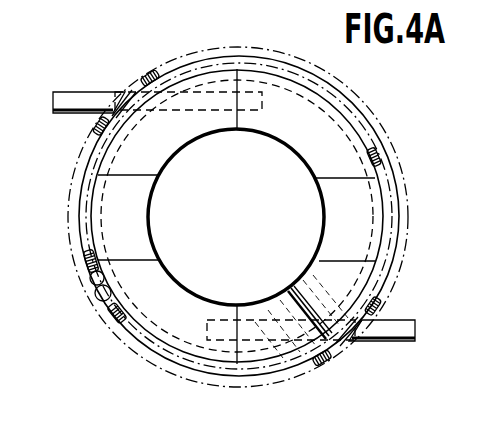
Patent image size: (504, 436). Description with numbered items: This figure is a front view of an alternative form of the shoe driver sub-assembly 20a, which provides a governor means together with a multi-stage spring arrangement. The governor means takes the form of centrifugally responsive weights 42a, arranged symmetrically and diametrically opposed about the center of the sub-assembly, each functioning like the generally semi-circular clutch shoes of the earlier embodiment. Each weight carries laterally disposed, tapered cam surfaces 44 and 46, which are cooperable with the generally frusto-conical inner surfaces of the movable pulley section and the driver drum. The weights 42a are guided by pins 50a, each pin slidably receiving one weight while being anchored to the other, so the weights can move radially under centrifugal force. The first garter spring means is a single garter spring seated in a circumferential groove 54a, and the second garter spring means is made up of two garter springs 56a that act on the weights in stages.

The shoe driver sub-assembly 20a is at (247, 36).
The centrifugally responsive weights 42a is at (309, 180).
The tapered cam surface 44 is at (125, 217).
The tapered cam surface 46 is at (331, 157).
The pins 50a is at (86, 95).
The circumferential groove 54a is at (295, 380).
The garter springs 56a is at (148, 72).